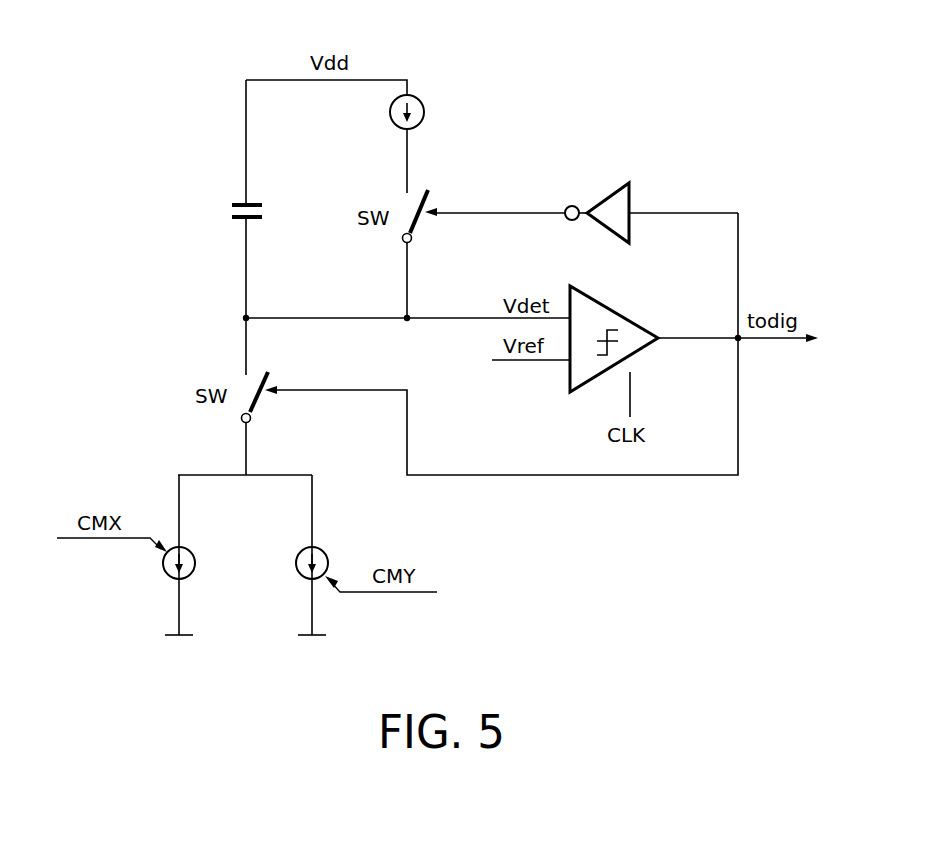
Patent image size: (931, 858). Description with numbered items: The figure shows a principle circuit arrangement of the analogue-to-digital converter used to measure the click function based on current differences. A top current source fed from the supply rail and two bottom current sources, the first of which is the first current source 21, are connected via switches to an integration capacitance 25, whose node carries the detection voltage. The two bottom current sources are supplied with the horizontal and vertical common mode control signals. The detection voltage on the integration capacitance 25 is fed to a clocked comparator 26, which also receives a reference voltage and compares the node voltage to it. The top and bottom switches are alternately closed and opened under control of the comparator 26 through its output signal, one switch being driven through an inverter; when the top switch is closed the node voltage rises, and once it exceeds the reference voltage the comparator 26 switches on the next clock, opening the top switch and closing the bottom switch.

The first current source 21 is at (420, 102).
The integration capacitance 25 is at (233, 202).
The comparator 26 is at (637, 323).